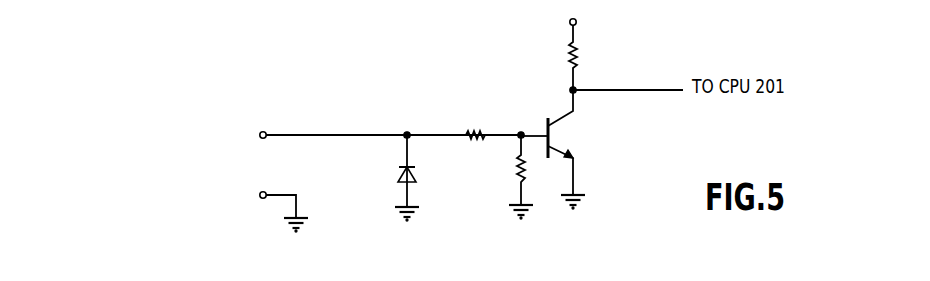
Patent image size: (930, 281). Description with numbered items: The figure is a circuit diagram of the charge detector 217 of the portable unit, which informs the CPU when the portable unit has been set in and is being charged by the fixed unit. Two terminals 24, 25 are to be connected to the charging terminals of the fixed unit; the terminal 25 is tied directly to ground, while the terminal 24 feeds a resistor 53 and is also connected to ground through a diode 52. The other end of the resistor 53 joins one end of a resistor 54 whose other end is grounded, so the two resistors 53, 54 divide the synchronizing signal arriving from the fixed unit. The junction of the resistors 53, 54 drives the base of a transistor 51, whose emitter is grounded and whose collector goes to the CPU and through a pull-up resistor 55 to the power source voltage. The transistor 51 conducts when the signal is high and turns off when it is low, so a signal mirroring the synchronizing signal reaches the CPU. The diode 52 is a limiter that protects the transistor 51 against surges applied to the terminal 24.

The charge detector 217 is at (430, 118).
The terminal 24 is at (259, 137).
The terminal 25 is at (259, 197).
The transistor 51 is at (560, 137).
The diode 52 is at (414, 174).
The resistor 53 is at (468, 129).
The resistor 54 is at (514, 170).
The pull-up resistor 55 is at (580, 55).